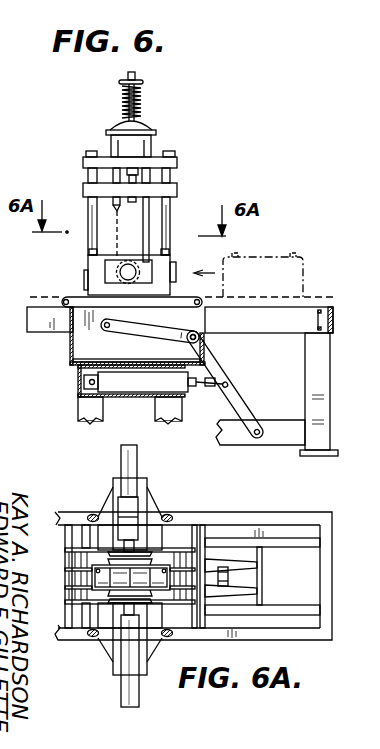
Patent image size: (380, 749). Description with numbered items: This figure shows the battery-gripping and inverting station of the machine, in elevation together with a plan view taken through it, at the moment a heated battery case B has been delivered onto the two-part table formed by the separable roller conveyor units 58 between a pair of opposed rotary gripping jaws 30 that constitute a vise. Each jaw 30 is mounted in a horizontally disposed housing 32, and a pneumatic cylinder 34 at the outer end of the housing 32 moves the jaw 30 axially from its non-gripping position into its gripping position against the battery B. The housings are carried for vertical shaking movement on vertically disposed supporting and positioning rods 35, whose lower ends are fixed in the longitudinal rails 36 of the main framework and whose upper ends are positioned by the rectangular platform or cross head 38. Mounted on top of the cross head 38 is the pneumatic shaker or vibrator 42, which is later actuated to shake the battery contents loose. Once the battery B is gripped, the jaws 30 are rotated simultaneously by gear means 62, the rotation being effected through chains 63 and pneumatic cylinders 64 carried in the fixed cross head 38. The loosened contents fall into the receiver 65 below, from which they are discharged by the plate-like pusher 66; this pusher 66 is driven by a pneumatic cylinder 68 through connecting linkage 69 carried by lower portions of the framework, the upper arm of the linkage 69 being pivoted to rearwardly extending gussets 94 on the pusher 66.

In FIG. 6, the pneumatic shaker or vibrator 42 is at (148, 107).
In FIG. 6, the rectangular platform or cross head 38 is at (161, 158).
In FIG. 6, the supporting and positioning rods 35 is at (150, 211).
In FIG. 6A, the supporting and positioning rods 35 is at (94, 514).
In FIG. 6, the chains 63 is at (114, 233).
In FIG. 6, the pneumatic cylinders 64 is at (152, 206).
In FIG. 6, the battery case B is at (88, 260).
In FIG. 6, the longitudinal rails 36 is at (105, 276).
In FIG. 6, the gear means 62 is at (135, 283).
In FIG. 6, the pusher 66 is at (70, 345).
In FIG. 6, the gussets 94 is at (118, 330).
In FIG. 6, the receiver 65 is at (143, 360).
In FIG. 6, the pneumatic cylinder 68 is at (128, 384).
In FIG. 6, the connecting linkage 69 is at (225, 372).
In FIG. 6A, the connecting linkage 69 is at (246, 557).
In FIG. 6A, the pneumatic cylinders 34 is at (125, 458).
In FIG. 6A, the horizontally disposed housings 32 is at (136, 505).
In FIG. 6A, the rotary gripping jaws 30 is at (138, 557).
In FIG. 6A, the separable roller conveyor units 58 is at (72, 565).